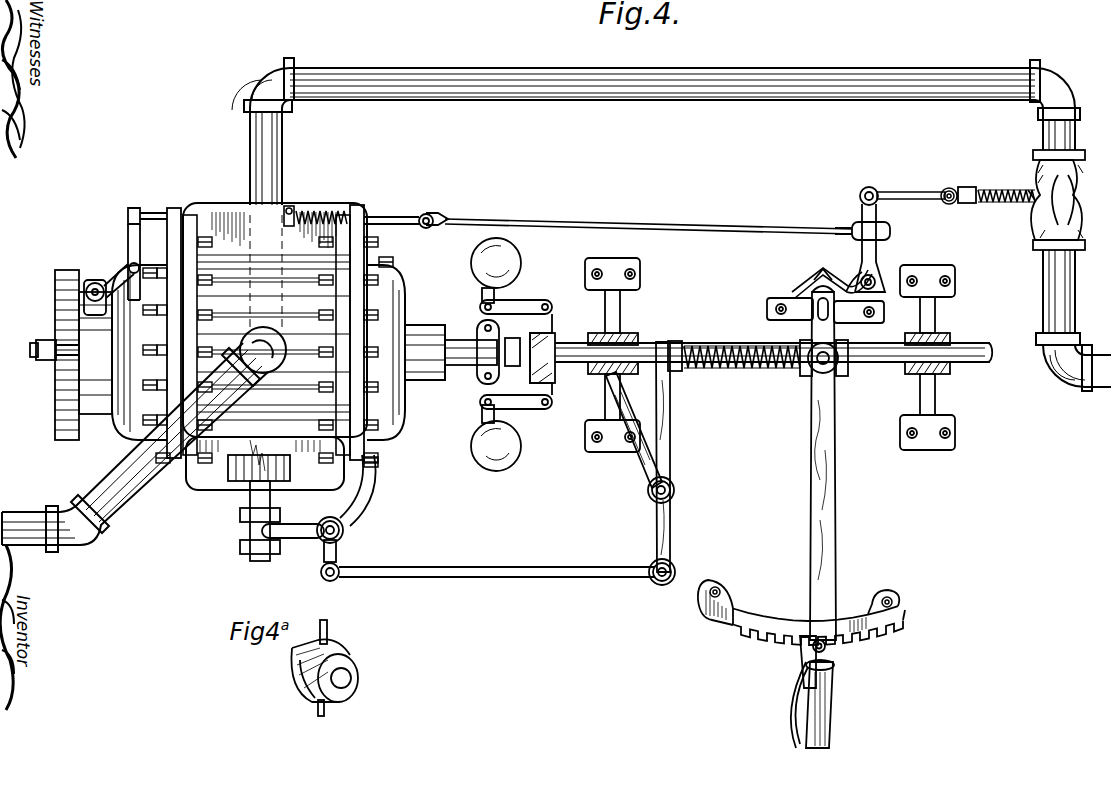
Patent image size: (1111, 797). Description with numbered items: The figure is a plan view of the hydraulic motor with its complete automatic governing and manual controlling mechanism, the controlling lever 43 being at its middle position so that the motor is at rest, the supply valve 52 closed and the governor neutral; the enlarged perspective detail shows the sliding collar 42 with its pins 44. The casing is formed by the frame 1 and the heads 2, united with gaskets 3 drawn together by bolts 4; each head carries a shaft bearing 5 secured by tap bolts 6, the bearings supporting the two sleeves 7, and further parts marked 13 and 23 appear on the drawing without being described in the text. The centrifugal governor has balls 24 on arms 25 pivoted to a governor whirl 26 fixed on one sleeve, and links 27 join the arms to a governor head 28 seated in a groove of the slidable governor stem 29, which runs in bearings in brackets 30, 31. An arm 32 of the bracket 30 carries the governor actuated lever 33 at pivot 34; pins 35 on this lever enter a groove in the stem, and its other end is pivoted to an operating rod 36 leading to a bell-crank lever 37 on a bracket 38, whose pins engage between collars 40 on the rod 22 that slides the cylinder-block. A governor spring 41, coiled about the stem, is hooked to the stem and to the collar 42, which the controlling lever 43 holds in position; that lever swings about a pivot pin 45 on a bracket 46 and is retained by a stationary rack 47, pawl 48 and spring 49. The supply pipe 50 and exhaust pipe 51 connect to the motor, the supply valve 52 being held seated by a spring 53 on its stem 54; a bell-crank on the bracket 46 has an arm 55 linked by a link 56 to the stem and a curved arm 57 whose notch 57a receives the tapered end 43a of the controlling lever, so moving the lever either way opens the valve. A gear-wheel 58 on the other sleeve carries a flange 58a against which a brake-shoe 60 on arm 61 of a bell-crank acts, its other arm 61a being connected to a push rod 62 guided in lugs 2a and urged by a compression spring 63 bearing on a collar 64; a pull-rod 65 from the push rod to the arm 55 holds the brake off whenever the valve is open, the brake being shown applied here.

In FIG. 4, the frame 1 is at (216, 210).
In FIG. 4, the casing heads 2 is at (172, 343).
In FIG. 4, the lugs 2a is at (174, 210).
In FIG. 4, the gaskets 3 is at (185, 303).
In FIG. 4, the bolts 4 is at (378, 464).
In FIG. 4, the shaft bearing 5 is at (130, 396).
In FIG. 4, the tap bolts 6 is at (392, 280).
In FIG. 4, the sleeves 7 is at (54, 360).
In FIG. 4, the shaft end 13 is at (40, 352).
In FIG. 4, the rod 22 is at (252, 504).
In FIG. 4, the gear 23 is at (236, 480).
In FIG. 4, the governor balls 24 is at (512, 258).
In FIG. 4, the arms 25 is at (482, 294).
In FIG. 4, the governor whirl 26 is at (478, 330).
In FIG. 4, the links 27 is at (525, 300).
In FIG. 4, the governor head 28 is at (556, 328).
In FIG. 4, the governor stem 29 is at (578, 366).
In FIG. 4, the supporting bracket 30 is at (622, 310).
In FIG. 4, the supporting bracket 31 is at (942, 324).
In FIG. 4, the arm 32 is at (650, 462).
In FIG. 4, the governor actuated lever 33 is at (671, 430).
In FIG. 4, the pivot 34 is at (650, 490).
In FIG. 4, the pins or lugs 35 is at (670, 343).
In FIG. 4, the operating rod 36 is at (485, 568).
In FIG. 4, the bell-crank lever 37 is at (258, 532).
In FIG. 4, the bracket 38 is at (374, 492).
In FIG. 4, the collars 40 is at (240, 518).
In FIG. 4, the governor spring 41 is at (735, 348).
In FIG. 4, the collar 42 is at (805, 378).
In FIG. 4A, the collar 42 is at (300, 660).
In FIG. 4, the controlling lever 43 is at (812, 432).
In FIG. 4, the tapered end 43a is at (860, 276).
In FIG. 4, the pins 44 is at (845, 376).
In FIG. 4A, the pins 44 is at (328, 636).
In FIG. 4, the pivot pin 45 is at (808, 322).
In FIG. 4, the bracket 46 is at (848, 322).
In FIG. 4, the stationary rack 47 is at (762, 630).
In FIG. 4, the pawl 48 is at (804, 652).
In FIG. 4, the spring 49 is at (804, 680).
In FIG. 4, the supply pipe 50 is at (283, 128).
In FIG. 4, the exhaust pipe 51 is at (125, 474).
In FIG. 4, the supply valve 52 is at (1060, 203).
In FIG. 4, the spring 53 is at (1000, 202).
In FIG. 4, the valve stem 54 is at (1040, 195).
In FIG. 4, the arm 55 is at (880, 225).
In FIG. 4, the link 56 is at (895, 192).
In FIG. 4, the arm 57 is at (796, 290).
In FIG. 4, the notch 57a is at (820, 270).
In FIG. 4, the gear-wheel 58 is at (64, 270).
In FIG. 4, the flange 58a is at (87, 392).
In FIG. 4, the brake-shoe 60 is at (88, 282).
In FIG. 4, the arm 61 is at (117, 280).
In FIG. 4, the arm 61a is at (130, 244).
In FIG. 4, the push rod 62 is at (430, 212).
In FIG. 4, the compression spring 63 is at (325, 210).
In FIG. 4, the collar 64 is at (290, 208).
In FIG. 4, the pull-rod 65 is at (590, 222).